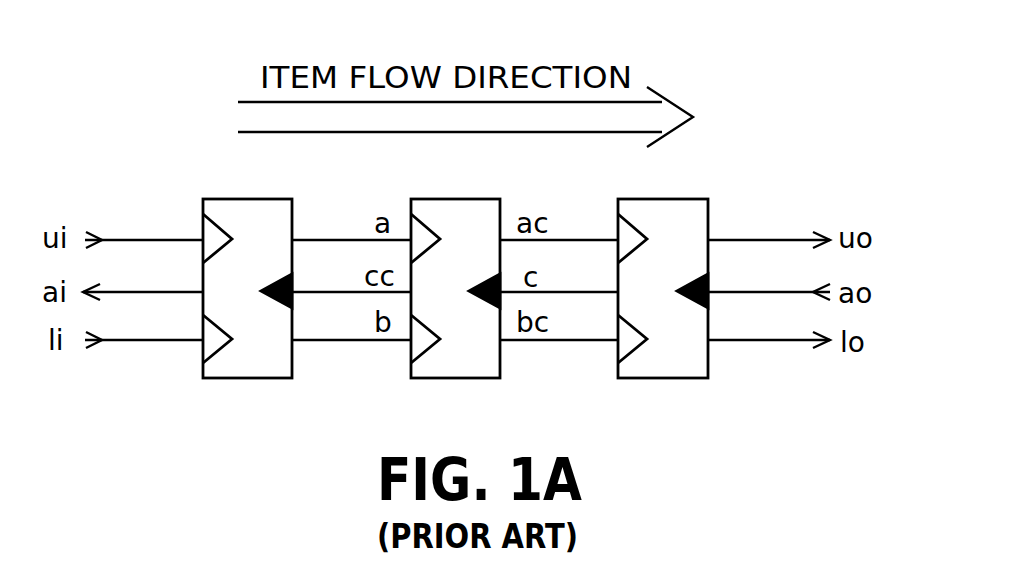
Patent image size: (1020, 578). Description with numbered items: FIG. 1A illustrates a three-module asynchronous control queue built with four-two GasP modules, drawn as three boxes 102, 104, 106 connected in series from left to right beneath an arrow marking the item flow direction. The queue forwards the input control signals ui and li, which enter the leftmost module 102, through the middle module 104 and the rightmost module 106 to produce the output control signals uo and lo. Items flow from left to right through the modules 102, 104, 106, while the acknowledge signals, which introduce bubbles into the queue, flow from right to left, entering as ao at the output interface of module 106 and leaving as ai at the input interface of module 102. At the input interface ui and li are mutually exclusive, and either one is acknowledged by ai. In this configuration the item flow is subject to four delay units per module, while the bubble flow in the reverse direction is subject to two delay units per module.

The first processing stage 102 is at (247, 313).
The second processing stage 104 is at (455, 313).
The third processing stage 106 is at (663, 313).